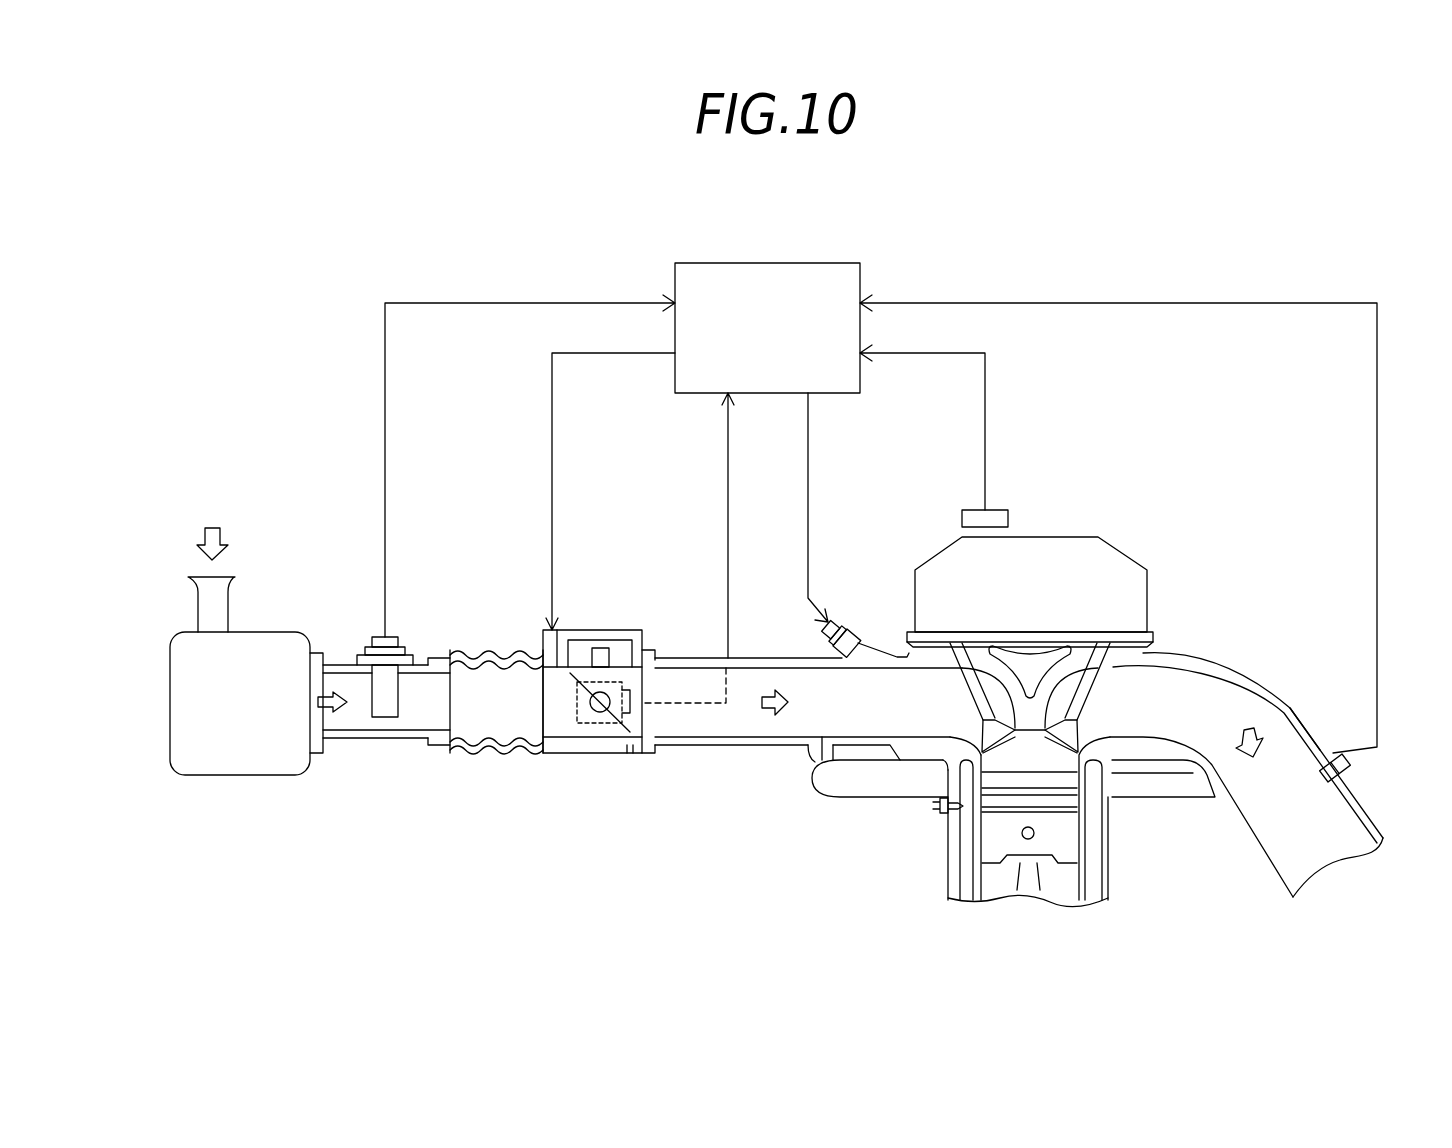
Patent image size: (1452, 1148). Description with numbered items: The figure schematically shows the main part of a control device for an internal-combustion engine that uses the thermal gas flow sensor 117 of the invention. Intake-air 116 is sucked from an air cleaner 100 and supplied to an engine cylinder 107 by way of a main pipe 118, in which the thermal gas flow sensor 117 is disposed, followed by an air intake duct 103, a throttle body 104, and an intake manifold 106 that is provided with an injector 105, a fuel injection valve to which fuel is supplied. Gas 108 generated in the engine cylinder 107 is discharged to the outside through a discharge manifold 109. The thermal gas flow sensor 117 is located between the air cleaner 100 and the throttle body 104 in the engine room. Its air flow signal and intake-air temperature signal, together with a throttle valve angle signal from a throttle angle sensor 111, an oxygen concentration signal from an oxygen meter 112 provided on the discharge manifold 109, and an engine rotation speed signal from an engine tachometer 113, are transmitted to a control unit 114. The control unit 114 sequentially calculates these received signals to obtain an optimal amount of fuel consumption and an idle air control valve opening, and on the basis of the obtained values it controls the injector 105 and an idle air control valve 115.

The air cleaner 100 is at (269, 632).
The air intake duct 103 is at (465, 650).
The throttle body 104 is at (628, 753).
The injector 105 is at (838, 624).
The intake manifold 106 is at (768, 658).
The engine cylinder 107 is at (1035, 758).
The gas 108 is at (1250, 723).
The discharge manifold 109 is at (1280, 697).
The throttle angle sensor 111 is at (590, 728).
The oxygen meter 112 is at (1348, 770).
The engine tachometer 113 is at (1008, 518).
The control unit 114 is at (765, 263).
The idle air control valve 115 is at (545, 640).
The intake-air 116 is at (198, 540).
The thermal gas flow sensor 117 is at (372, 642).
The main pipe 118 is at (378, 742).